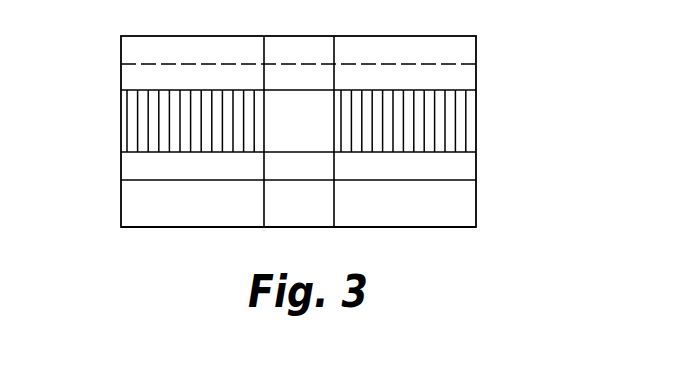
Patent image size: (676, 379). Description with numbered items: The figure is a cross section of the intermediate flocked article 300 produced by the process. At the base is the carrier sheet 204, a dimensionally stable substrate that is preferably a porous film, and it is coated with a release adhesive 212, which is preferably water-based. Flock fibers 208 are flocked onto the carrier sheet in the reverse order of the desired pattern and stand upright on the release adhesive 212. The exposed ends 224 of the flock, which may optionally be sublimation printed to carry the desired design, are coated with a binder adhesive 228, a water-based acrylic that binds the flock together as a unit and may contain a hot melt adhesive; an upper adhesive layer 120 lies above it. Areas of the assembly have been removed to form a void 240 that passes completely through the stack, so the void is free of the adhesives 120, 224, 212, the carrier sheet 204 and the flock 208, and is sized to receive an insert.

The adhesive 120 is at (476, 43).
The binder adhesive 228 is at (476, 80).
The flock fibers 208 is at (476, 123).
The release adhesive 212 is at (476, 168).
The carrier sheet 204 is at (476, 225).
The exposed ends of the flock 224 is at (133, 90).
The void 240 is at (318, 132).
The intermediate flocked article 300 is at (72, 213).